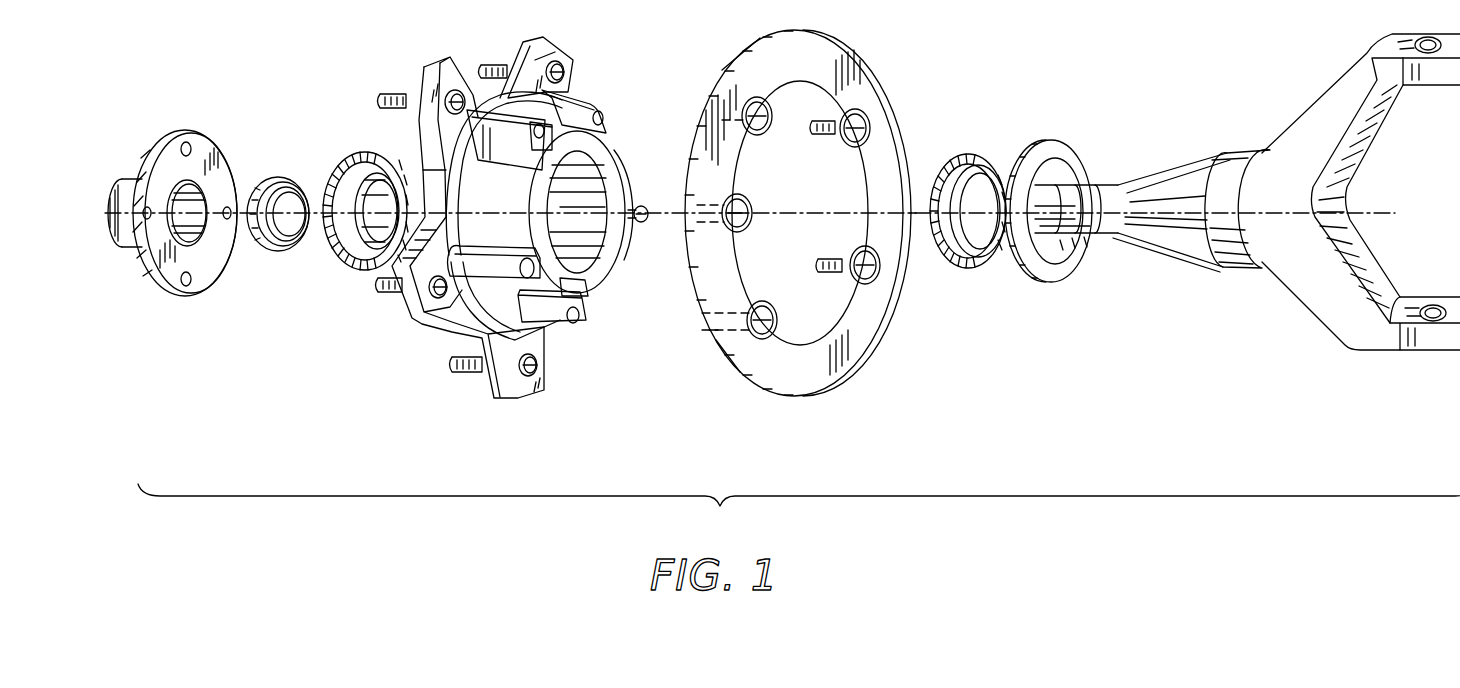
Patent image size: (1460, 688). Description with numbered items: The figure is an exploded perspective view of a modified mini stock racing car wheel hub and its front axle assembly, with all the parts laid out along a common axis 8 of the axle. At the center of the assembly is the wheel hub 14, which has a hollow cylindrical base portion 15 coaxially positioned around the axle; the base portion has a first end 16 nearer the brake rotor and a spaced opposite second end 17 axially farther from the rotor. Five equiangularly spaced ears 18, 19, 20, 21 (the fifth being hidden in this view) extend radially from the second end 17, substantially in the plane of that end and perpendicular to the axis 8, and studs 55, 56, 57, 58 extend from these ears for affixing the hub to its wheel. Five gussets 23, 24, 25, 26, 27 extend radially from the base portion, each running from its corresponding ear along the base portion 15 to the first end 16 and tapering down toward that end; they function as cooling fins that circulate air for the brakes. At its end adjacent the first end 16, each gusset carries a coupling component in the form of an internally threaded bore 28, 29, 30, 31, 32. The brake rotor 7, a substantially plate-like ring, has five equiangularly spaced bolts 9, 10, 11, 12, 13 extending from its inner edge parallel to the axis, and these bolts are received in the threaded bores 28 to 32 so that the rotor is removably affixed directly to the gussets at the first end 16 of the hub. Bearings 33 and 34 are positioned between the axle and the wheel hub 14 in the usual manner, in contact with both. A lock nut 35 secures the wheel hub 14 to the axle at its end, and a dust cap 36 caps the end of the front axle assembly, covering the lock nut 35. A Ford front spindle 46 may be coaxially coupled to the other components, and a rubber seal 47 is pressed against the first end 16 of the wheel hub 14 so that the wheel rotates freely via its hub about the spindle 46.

The brake rotor 7 is at (858, 80).
The axis 8 is at (916, 216).
The bolt 9 is at (818, 137).
The bolt 10 is at (723, 77).
The bolt 11 is at (742, 200).
The bolt 12 is at (716, 346).
The bolt 13 is at (822, 260).
The wheel hub 14 is at (406, 403).
The hollow cylindrical base portion 15 is at (612, 194).
The first end 16 is at (612, 180).
The second end 17 is at (424, 182).
The ear 18 is at (548, 52).
The ear 19 is at (447, 60).
The ear 20 is at (428, 320).
The ear 21 is at (530, 392).
The gusset 23 is at (572, 102).
The gusset 24 is at (490, 120).
The gusset 25 is at (468, 328).
The gusset 26 is at (560, 336).
The gusset 27 is at (624, 262).
The internally threaded bore 28 is at (606, 118).
The internally threaded bore 29 is at (592, 150).
The internally threaded bore 30 is at (588, 290).
The internally threaded bore 31 is at (586, 322).
The internally threaded bore 32 is at (644, 224).
The bearing 33 is at (961, 160).
The bearing 34 is at (360, 265).
The lock nut 35 is at (296, 178).
The dust cap 36 is at (208, 292).
The Ford front spindle 46 is at (1318, 118).
The rubber seal 47 is at (1070, 153).
The stud 55 is at (500, 62).
The stud 56 is at (378, 99).
The stud 57 is at (380, 296).
The stud 58 is at (490, 385).